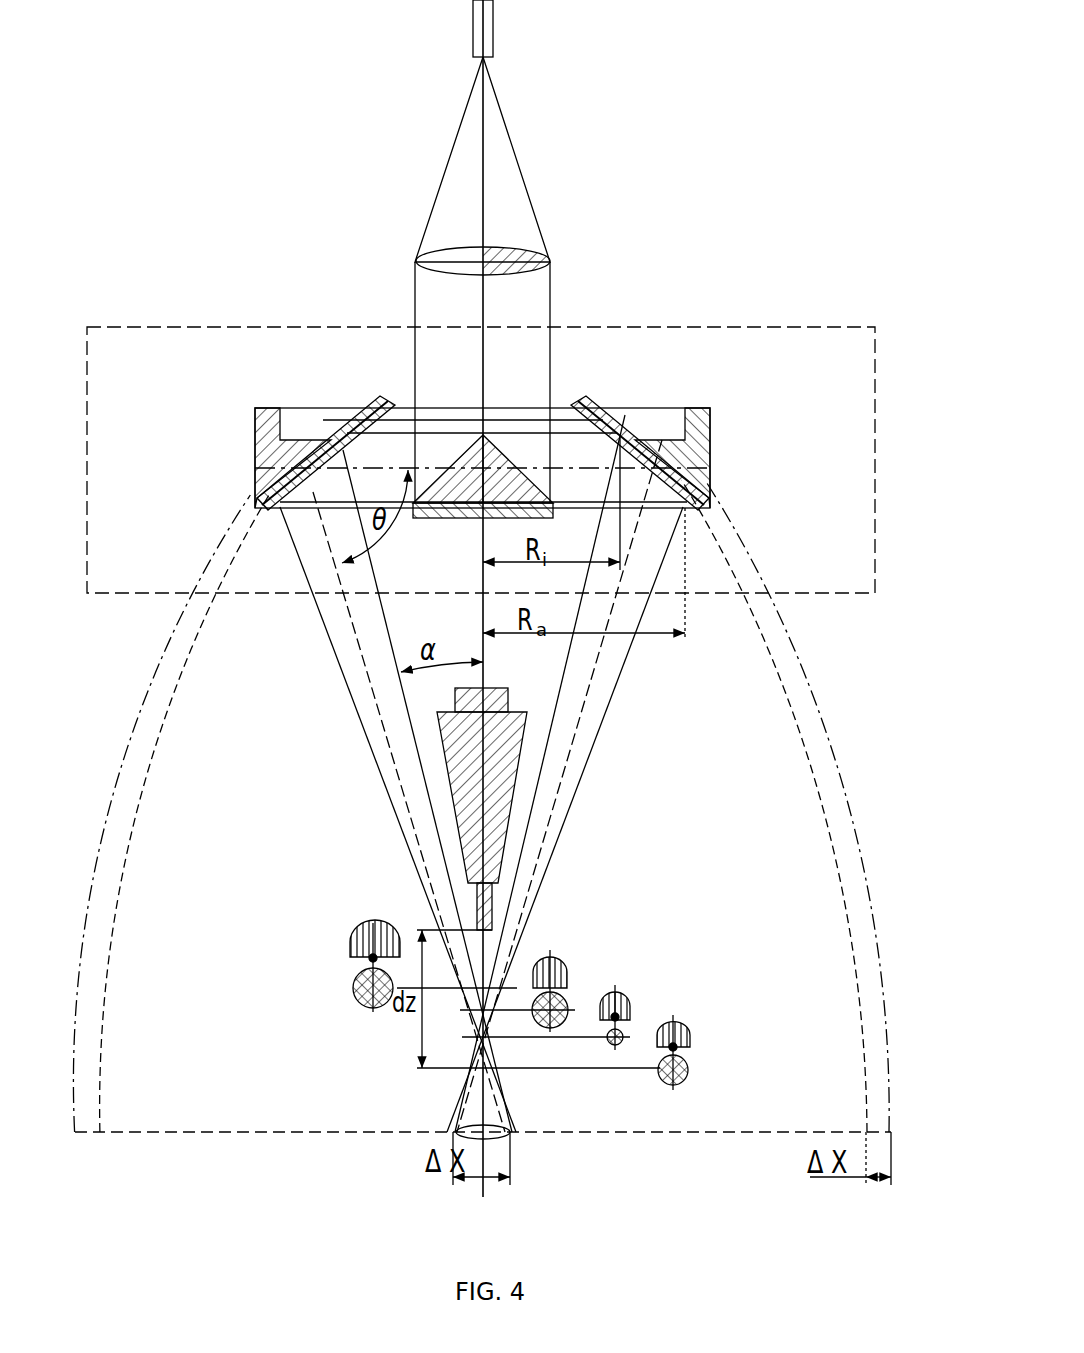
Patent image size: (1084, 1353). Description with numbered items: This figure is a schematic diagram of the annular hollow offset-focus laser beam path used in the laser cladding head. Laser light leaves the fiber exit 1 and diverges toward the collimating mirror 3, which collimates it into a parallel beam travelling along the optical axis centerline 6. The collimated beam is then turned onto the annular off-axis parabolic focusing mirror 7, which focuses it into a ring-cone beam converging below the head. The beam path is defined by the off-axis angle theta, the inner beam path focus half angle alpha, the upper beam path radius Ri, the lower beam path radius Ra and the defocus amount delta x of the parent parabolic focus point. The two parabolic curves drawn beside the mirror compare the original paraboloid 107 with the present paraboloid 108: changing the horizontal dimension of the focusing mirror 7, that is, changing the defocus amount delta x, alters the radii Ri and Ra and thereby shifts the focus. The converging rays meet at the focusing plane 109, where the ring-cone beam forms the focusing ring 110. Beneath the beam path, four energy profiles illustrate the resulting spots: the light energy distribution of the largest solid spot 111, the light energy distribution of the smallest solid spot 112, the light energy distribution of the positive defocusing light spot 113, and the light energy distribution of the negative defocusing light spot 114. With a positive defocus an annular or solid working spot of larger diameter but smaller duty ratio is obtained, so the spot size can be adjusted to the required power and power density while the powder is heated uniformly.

The fiber exit 1 is at (371, 55).
The collimating mirror 3 is at (382, 280).
The optical axis centerline 6 is at (462, 386).
The annular off-axis parabolic focusing mirror 7 is at (466, 424).
The original paraboloid 107 is at (481, 806).
The present paraboloid 108 is at (483, 806).
The focusing plane 109 is at (483, 1087).
The focusing ring 110 is at (583, 1153).
The light energy distribution of the largest solid spot 111 is at (670, 984).
The light energy distribution of the smallest solid spot 112 is at (732, 1017).
The light energy distribution of positive defocusing light spot 113 is at (776, 1052).
The light energy distribution of negative defocusing light spot 114 is at (308, 966).